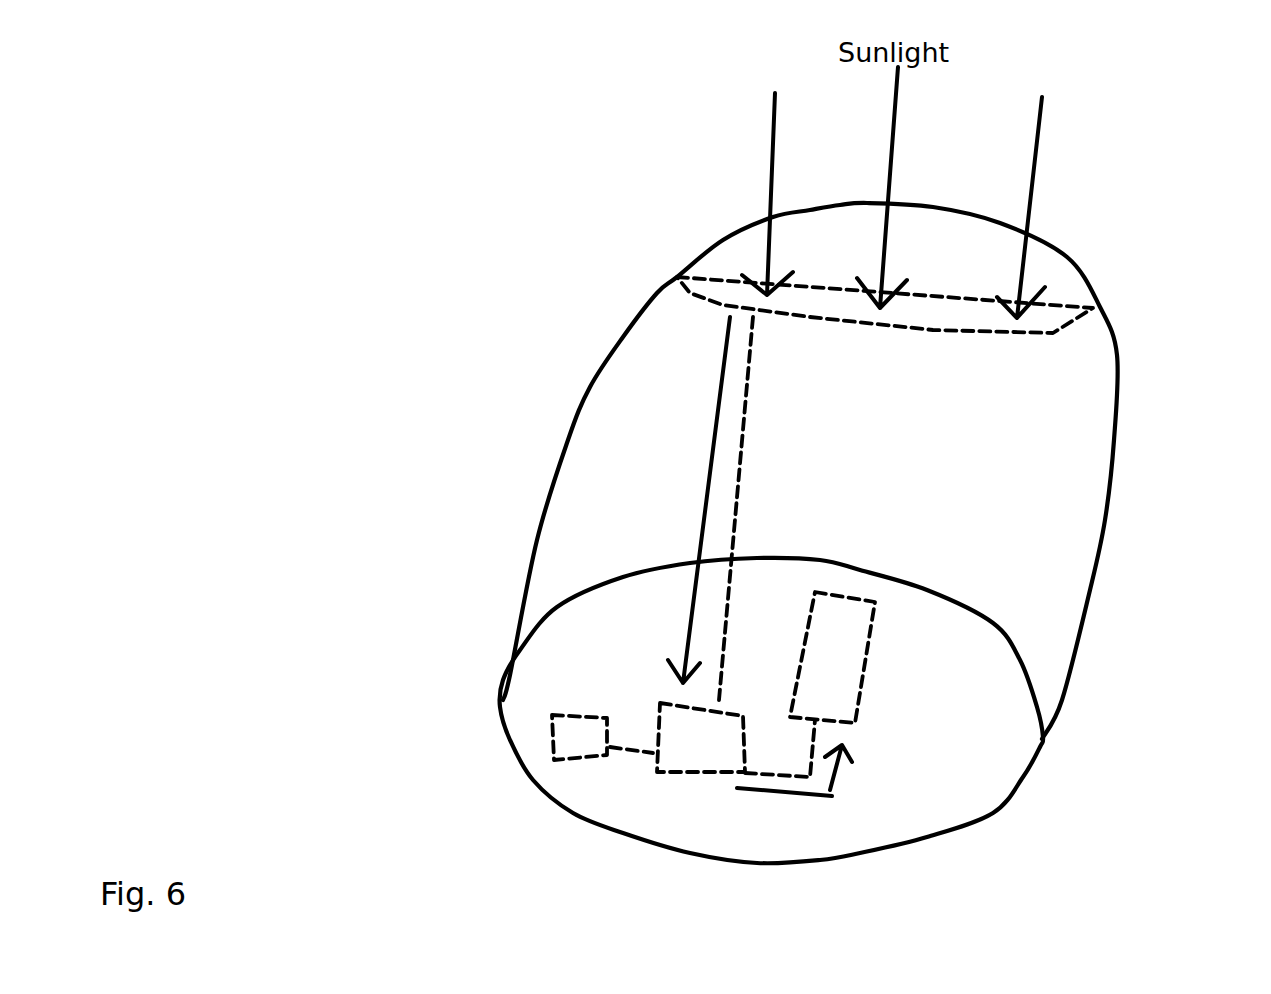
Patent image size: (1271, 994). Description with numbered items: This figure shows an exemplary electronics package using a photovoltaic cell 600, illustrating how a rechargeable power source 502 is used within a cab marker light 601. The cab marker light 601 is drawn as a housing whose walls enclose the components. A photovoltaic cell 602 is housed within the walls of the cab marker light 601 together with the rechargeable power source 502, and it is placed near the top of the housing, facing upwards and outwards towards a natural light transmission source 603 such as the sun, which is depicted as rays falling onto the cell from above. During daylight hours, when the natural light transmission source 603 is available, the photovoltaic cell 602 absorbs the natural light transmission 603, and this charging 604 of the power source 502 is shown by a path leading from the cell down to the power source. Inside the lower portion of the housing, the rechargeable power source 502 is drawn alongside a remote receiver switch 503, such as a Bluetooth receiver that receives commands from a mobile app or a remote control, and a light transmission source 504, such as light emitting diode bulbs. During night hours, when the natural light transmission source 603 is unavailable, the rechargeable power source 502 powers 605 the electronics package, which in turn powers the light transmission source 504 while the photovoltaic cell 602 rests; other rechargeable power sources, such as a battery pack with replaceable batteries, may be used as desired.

The electronics package using a photovoltaic cell 600 is at (373, 825).
The cab marker light 601 is at (1032, 768).
The photovoltaic cell 602 is at (1058, 336).
The natural light transmission source 603 is at (773, 156).
The charging 604 is at (705, 475).
The powering 605 is at (832, 797).
The rechargeable power source 502 is at (571, 762).
The remote receiver switch 503 is at (683, 774).
The light transmission source 504 is at (858, 697).